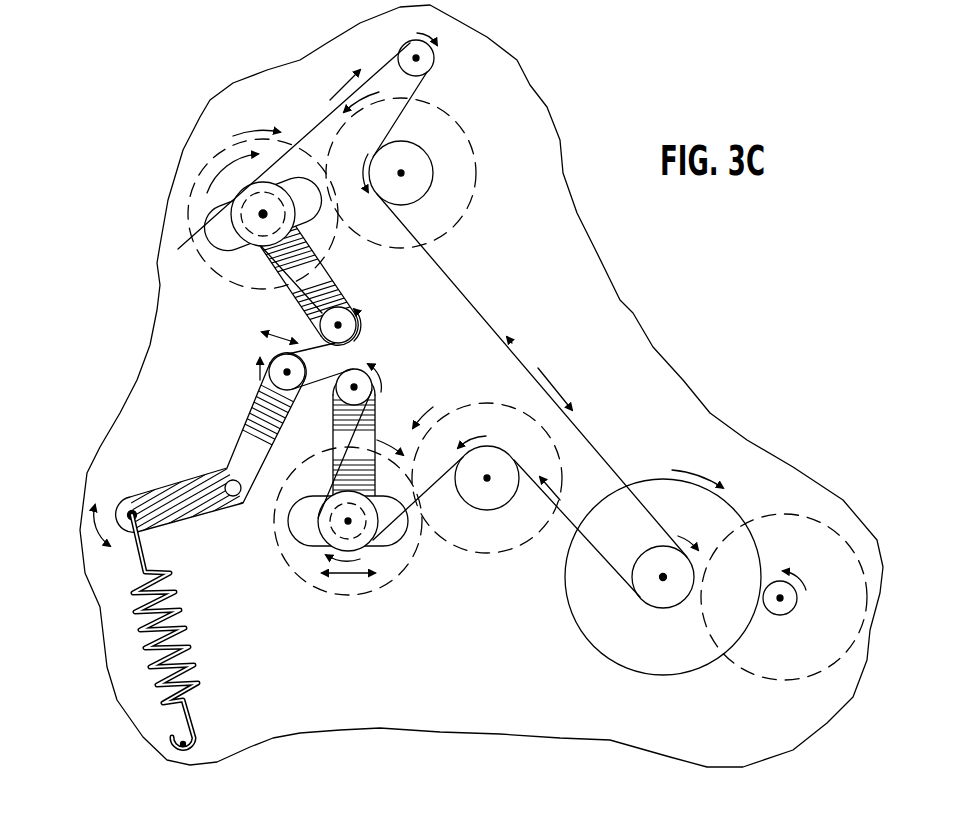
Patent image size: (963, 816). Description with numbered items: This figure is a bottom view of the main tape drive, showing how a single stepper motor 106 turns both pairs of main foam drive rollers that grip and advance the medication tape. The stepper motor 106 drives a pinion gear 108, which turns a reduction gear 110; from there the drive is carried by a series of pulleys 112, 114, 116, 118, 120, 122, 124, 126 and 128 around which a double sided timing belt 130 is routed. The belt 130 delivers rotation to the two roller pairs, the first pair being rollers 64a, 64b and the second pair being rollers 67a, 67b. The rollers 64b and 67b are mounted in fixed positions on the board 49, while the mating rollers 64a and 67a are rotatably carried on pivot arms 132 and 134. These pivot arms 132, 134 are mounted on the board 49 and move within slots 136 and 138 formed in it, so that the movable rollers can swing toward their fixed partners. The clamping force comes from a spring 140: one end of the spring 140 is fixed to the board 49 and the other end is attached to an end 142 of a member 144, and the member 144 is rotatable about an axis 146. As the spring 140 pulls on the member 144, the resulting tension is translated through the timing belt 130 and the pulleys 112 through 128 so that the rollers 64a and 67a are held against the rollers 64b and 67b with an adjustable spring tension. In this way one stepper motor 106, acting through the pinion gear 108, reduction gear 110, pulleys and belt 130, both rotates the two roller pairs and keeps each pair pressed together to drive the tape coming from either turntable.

The board 49 is at (577, 245).
The main foam drive roller 64a is at (367, 593).
The main foam drive roller 64b is at (530, 543).
The main foam drive roller 67a is at (187, 200).
The main foam drive roller 67b is at (474, 141).
The stepper motor 106 is at (827, 527).
The pinion gear 108 is at (787, 612).
The reduction gear 110 is at (732, 502).
The pulley 112 is at (653, 607).
The pulley 114 is at (483, 505).
The pulley 116 is at (378, 524).
The pulley 118 is at (370, 368).
The pulley 120 is at (280, 355).
The pulley 122 is at (347, 309).
The pulley 124 is at (240, 232).
The pulley 126 is at (409, 42).
The pulley 128 is at (433, 174).
The double sided timing belt 130 is at (509, 335).
The pivot arm 132 is at (333, 413).
The pivot arm 134 is at (297, 288).
The slot 136 is at (303, 540).
The slot 138 is at (233, 207).
The spring 140 is at (150, 657).
The end of member 142 is at (128, 497).
The member 144 is at (260, 407).
The axis 146 is at (236, 480).